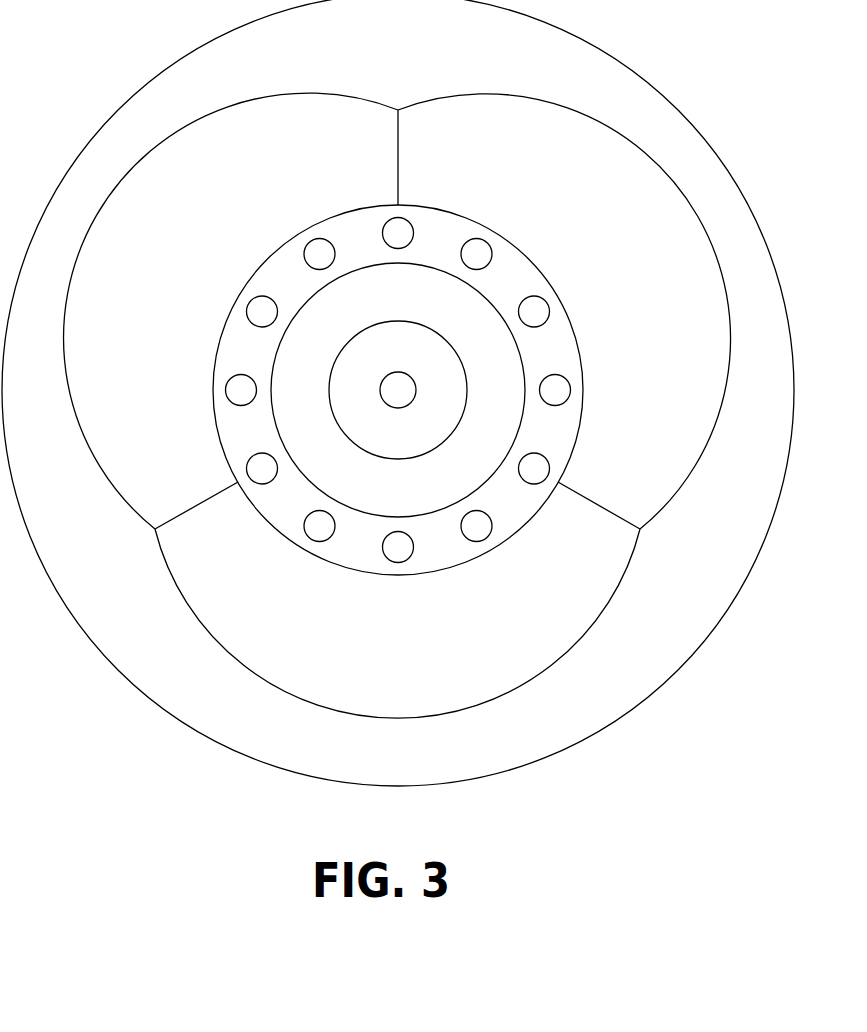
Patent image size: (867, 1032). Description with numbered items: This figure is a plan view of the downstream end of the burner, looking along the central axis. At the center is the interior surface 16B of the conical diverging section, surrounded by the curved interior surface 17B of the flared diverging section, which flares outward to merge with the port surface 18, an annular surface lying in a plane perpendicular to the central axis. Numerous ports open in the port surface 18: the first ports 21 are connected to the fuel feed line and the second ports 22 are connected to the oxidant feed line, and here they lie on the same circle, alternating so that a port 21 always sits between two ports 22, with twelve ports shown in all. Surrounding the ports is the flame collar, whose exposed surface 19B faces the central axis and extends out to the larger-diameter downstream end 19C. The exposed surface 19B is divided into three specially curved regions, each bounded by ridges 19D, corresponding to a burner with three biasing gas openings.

The interior surface of the conical diverging section 16B is at (418, 362).
The interior surface of the flared diverging section 17B is at (360, 330).
The port surface 18 is at (398, 390).
The exposed surface of the flame collar 19B is at (210, 201).
The downstream end of the flame collar 19C is at (297, 70).
The ridges 19D is at (398, 133).
The first ports 21 is at (320, 255).
The second ports 22 is at (392, 233).